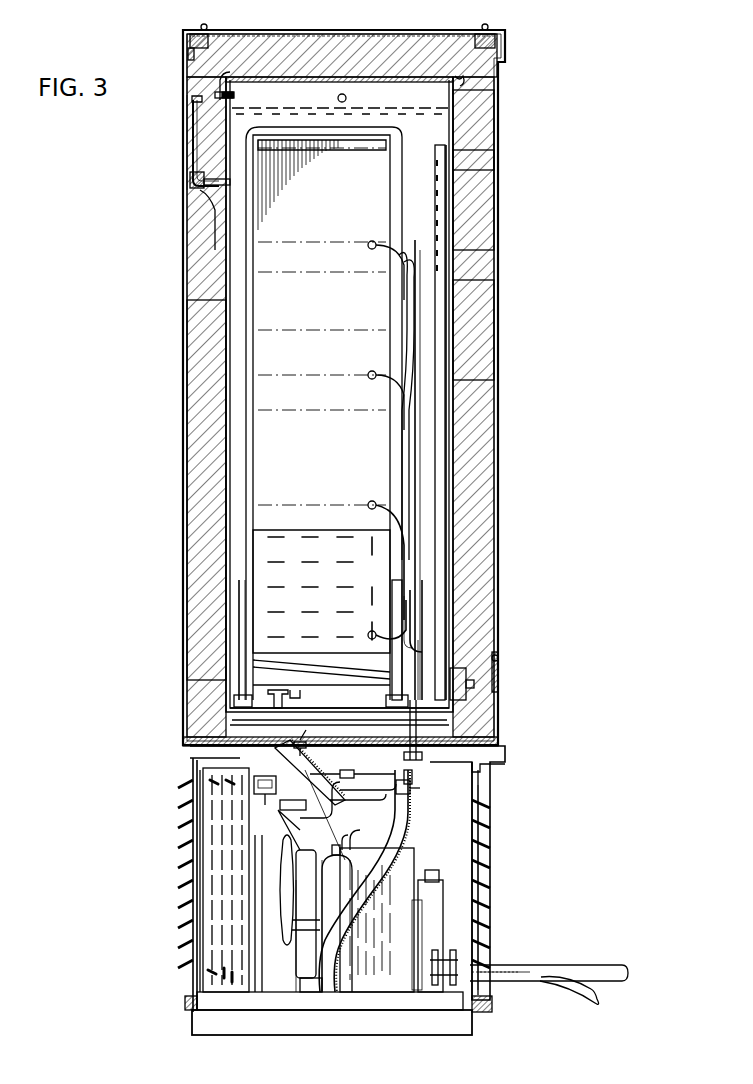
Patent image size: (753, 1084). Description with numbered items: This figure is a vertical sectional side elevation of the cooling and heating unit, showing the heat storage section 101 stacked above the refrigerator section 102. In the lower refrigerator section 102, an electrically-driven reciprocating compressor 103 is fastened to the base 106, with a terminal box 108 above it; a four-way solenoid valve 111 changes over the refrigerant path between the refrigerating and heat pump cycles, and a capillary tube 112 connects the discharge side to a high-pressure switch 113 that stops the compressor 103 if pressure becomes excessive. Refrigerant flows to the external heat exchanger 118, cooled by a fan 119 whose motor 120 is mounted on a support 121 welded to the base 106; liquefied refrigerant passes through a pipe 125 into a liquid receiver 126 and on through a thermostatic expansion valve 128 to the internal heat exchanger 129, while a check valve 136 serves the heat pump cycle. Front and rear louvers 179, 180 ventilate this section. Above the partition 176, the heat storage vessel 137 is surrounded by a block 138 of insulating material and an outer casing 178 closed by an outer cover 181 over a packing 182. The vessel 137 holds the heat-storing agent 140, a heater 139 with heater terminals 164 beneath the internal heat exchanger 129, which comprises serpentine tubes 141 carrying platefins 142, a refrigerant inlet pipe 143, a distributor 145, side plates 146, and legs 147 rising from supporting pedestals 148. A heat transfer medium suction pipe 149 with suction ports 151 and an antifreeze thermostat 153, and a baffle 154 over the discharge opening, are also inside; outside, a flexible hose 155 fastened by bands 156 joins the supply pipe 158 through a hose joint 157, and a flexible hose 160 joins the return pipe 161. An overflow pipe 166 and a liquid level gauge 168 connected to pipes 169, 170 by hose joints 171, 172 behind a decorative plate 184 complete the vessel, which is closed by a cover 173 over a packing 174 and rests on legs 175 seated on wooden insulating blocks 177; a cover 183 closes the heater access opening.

The heat storage section 101 is at (187, 282).
The refrigerator section 102 is at (493, 812).
The electrically-driven reciprocating compressor 103 is at (395, 855).
The base 106 is at (405, 1005).
The terminal box 108 is at (380, 838).
The four-way solenoid valve 111 is at (392, 770).
The capillary tube 112 is at (362, 876).
The high-pressure switch 113 is at (436, 950).
The external heat exchanger 118 is at (215, 806).
The fan 119 is at (284, 930).
The motor 120 is at (306, 884).
The support 121 is at (262, 992).
The pipe 125 is at (300, 843).
The liquid receiver 126 is at (343, 990).
The thermostatic expansion valve 128 is at (392, 800).
The internal heat exchanger 129 is at (418, 270).
The check valve 136 is at (412, 780).
The heat storage vessel 137 is at (456, 298).
The block of thermally insulating material 138 is at (470, 169).
The heater 139 is at (250, 676).
The heat-storing agent 140 is at (445, 132).
The tubes 141 is at (372, 509).
The platefins 142 is at (392, 180).
The refrigerant inlet pipe 143 is at (425, 660).
The distributor 145 is at (418, 630).
The side plates 146 is at (398, 340).
The legs 147 is at (404, 592).
The supporting pedestals 148 is at (232, 712).
The heat transfer medium suction pipe 149 is at (440, 230).
The heat transfer medium suction ports 151 is at (445, 208).
The antifreeze thermostat 153 is at (265, 796).
The baffle 154 is at (292, 692).
The flexible hose 155 is at (308, 992).
The bands 156 is at (480, 768).
The hose joint 157 is at (438, 995).
The heat transfer medium supply pipe 158 is at (525, 979).
The flexible hose 160 is at (278, 754).
The heat transfer medium return pipe 161 is at (594, 968).
The heater terminals 164 is at (474, 684).
The overflow pipe 166 is at (347, 98).
The liquid level gauge 168 is at (196, 150).
The pipe 169 is at (206, 205).
The pipe 170 is at (222, 78).
The hose joint 171 is at (190, 181).
The hose joint 172 is at (214, 95).
The cover 173 is at (310, 82).
The packing 174 is at (460, 84).
The legs 175 is at (358, 722).
The partition 176 is at (420, 730).
The thermally insulating blocks 177 is at (306, 748).
The outer casing 178 is at (187, 552).
The front louver 179 is at (185, 855).
The rear louver 180 is at (486, 880).
The outer cover 181 is at (282, 32).
The packing 182 is at (192, 38).
The cover 183 is at (499, 656).
The decorative plate 184 is at (183, 126).